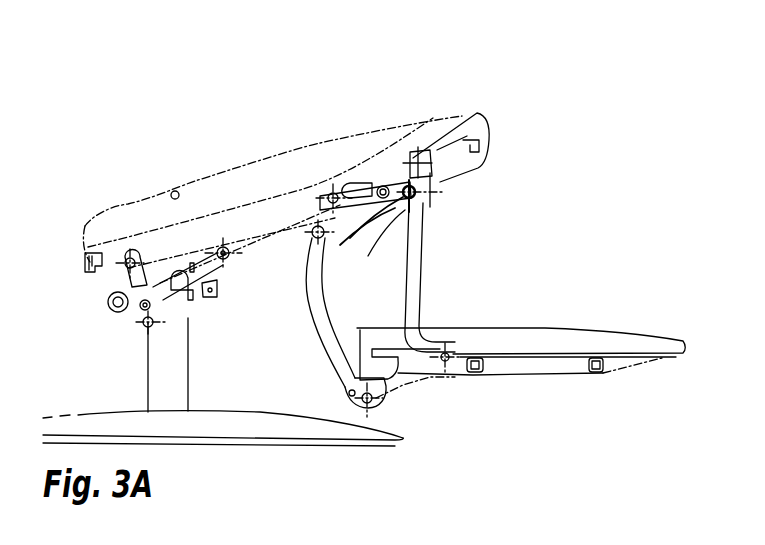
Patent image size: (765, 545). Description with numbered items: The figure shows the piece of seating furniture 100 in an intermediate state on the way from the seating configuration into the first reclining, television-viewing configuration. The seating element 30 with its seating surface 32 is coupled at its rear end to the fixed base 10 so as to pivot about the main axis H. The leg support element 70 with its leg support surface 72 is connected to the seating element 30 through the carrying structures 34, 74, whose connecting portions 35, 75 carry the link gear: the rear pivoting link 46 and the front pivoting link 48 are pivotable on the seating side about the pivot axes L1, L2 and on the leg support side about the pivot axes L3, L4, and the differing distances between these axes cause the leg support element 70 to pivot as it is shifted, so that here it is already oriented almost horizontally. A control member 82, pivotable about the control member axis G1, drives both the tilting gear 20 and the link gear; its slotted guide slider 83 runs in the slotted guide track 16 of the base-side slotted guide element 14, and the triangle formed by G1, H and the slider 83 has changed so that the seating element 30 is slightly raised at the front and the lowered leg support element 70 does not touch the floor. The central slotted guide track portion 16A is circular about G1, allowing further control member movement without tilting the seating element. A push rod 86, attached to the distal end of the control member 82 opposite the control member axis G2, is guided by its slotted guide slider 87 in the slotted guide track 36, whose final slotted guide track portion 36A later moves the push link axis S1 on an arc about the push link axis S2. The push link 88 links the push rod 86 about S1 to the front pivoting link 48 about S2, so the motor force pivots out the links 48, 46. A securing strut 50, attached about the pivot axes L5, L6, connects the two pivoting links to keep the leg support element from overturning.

The piece of seating furniture 100 is at (126, 78).
The seating element 30 is at (182, 172).
The seating surface 32 is at (210, 173).
The carrying structure 34 is at (260, 245).
The push rod 86 is at (259, 268).
The pivot axis L2 is at (332, 194).
The slotted guide track 36 is at (370, 187).
The slotted guide slider 87 is at (382, 185).
The connecting portion 35 is at (394, 172).
The pivot axis L1 is at (412, 188).
The push link 88 is at (412, 190).
The final slotted guide track portion 36A is at (440, 166).
The push link axis S2 is at (436, 178).
The push link axis S1 is at (392, 220).
The pivot axis L5 is at (397, 218).
The securing strut 50 is at (352, 238).
The pivot axis L6 is at (312, 240).
The rear pivoting link 46 is at (318, 328).
The pivot axis L4 is at (366, 412).
The connecting portion 75 is at (403, 383).
The front pivoting link 48 is at (418, 270).
The leg support element 70 is at (468, 320).
The leg support surface 72 is at (450, 326).
The carrying structure 74 is at (472, 358).
The pivot axis L3 is at (450, 362).
The base 10 is at (203, 382).
The control member axis G1 is at (130, 258).
The tilting gear 20 is at (155, 280).
The control member 82 is at (137, 273).
The slotted guide track 16 is at (120, 300).
The slotted guide element 14 is at (117, 312).
The slotted guide slider 83 is at (145, 309).
The control member axis G2 is at (146, 327).
The central slotted guide track portion 16A is at (163, 298).
The main axis H is at (226, 260).